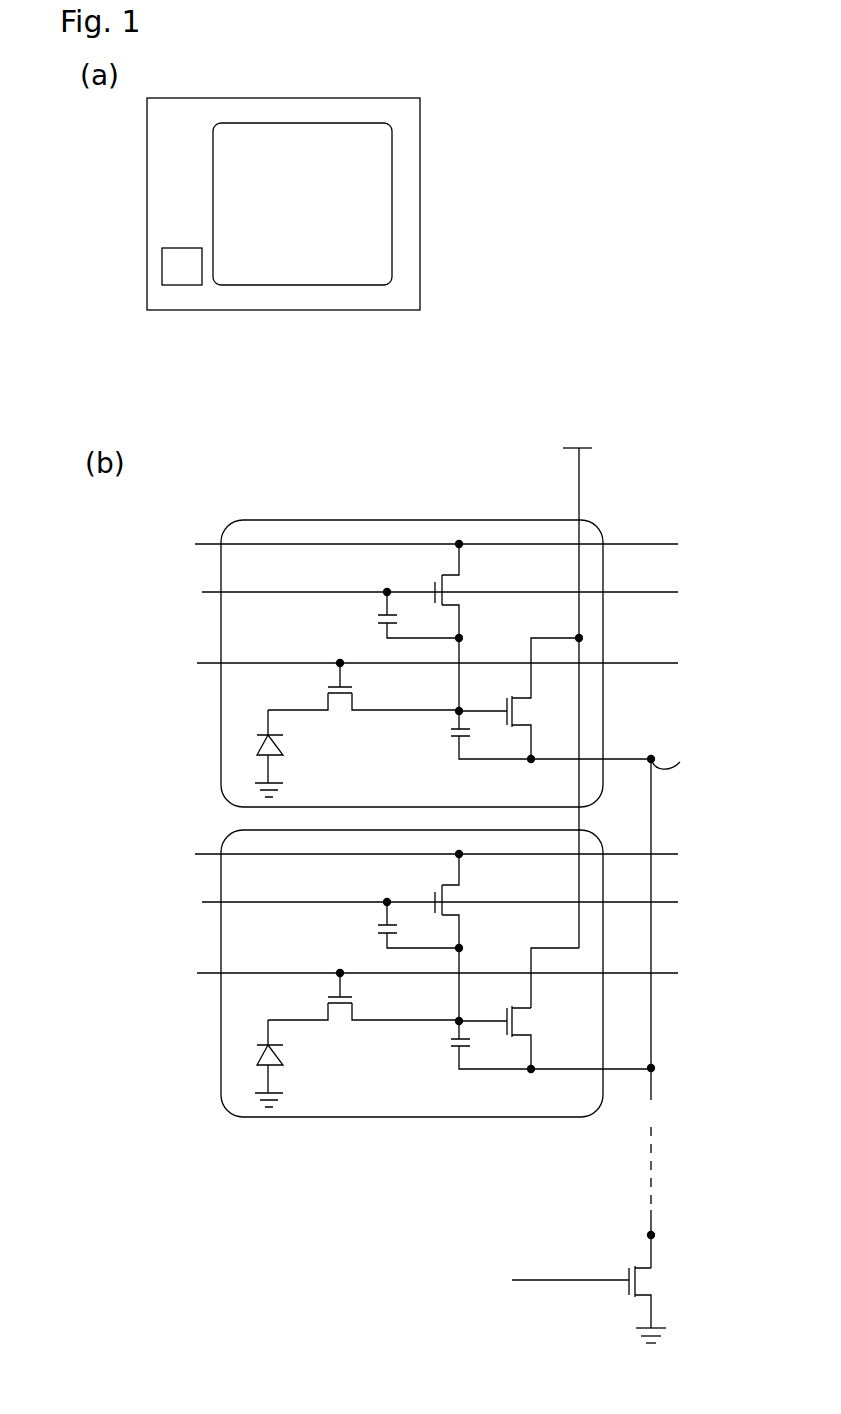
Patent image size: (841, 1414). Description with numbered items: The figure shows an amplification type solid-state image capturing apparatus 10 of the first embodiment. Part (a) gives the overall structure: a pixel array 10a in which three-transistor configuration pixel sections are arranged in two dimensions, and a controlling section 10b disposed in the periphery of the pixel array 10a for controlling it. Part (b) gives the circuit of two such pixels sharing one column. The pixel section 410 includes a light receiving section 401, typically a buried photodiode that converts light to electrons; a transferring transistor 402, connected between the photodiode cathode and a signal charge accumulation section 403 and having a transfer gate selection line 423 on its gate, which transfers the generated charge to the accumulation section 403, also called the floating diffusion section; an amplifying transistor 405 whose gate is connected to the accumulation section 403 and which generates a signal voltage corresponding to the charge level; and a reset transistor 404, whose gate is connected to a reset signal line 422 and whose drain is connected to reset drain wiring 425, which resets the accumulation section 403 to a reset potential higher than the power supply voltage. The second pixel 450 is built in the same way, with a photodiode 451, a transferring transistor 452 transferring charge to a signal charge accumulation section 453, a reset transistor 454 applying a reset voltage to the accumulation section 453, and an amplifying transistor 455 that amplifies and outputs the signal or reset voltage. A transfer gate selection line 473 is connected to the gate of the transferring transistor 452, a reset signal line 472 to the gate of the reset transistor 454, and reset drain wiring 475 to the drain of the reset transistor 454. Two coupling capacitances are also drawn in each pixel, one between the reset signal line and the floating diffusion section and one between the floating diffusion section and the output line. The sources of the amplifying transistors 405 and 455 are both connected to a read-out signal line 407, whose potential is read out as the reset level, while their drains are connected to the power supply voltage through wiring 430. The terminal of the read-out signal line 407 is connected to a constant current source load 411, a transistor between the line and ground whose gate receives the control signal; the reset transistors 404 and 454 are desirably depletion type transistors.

The amplification type solid-state image capturing apparatus 10 is at (317, 310).
The pixel array 10a is at (375, 195).
The controlling section 10b is at (180, 273).
The 3TR configuration pixel section 410 is at (380, 520).
The 3TR configuration pixel 450 is at (407, 990).
The wiring 430 is at (579, 473).
The reset drain wiring 425 is at (658, 544).
The reset signal line 422 is at (658, 592).
The transfer gate selection line 423 is at (658, 664).
The light receiving section 401 is at (283, 745).
The transferring transistor 402 is at (337, 708).
The signal charge accumulation section 403 is at (457, 710).
The reset transistor 404 is at (446, 597).
The amplifying transistor 405 is at (522, 712).
The reset drain wiring 475 is at (438, 856).
The reset signal line 472 is at (433, 904).
The transfer gate selection line 473 is at (435, 975).
The photodiode 451 is at (290, 1063).
The transferring transistor 452 is at (363, 996).
The signal charge accumulation section 453 is at (529, 1008).
The reset transistor 454 is at (423, 903).
The amplifying transistor 455 is at (539, 1039).
The read-out signal line 407 is at (651, 1107).
The constant current source load 411 is at (640, 1280).